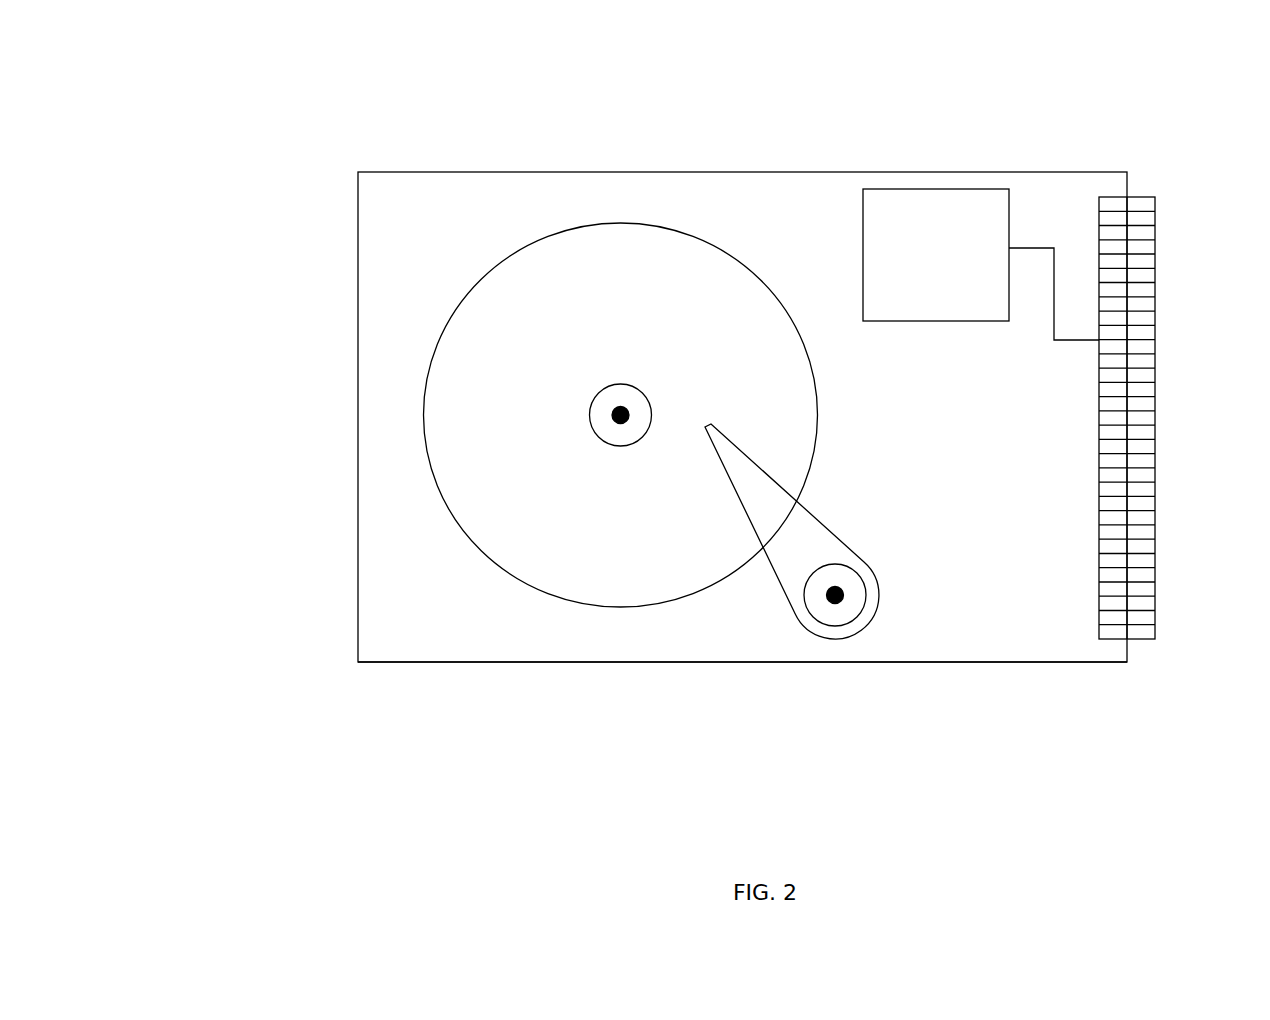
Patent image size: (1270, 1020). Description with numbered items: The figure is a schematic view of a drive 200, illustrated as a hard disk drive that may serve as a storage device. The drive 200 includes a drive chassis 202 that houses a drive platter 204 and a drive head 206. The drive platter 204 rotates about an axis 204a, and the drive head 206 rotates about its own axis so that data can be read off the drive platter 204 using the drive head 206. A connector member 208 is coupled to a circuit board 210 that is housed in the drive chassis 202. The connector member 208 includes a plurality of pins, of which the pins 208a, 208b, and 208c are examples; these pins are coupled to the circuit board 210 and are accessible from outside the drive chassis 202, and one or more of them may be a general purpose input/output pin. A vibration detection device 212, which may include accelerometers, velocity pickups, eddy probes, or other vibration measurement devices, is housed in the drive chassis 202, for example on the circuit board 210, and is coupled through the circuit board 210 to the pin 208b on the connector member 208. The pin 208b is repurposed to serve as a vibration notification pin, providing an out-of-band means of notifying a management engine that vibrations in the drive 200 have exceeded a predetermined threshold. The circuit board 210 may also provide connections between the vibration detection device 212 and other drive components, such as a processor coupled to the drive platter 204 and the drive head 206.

The drive 200 is at (241, 108).
The drive chassis 202 is at (357, 661).
The drive platter 204 is at (475, 547).
The axis 204a is at (610, 407).
The drive head 206 is at (793, 543).
The connector member 208 is at (1155, 197).
The pin 208a is at (1155, 245).
The pin 208b is at (1155, 340).
The pin 208c is at (1155, 465).
The circuit board 210 is at (973, 601).
The vibration detection device 212 is at (920, 303).